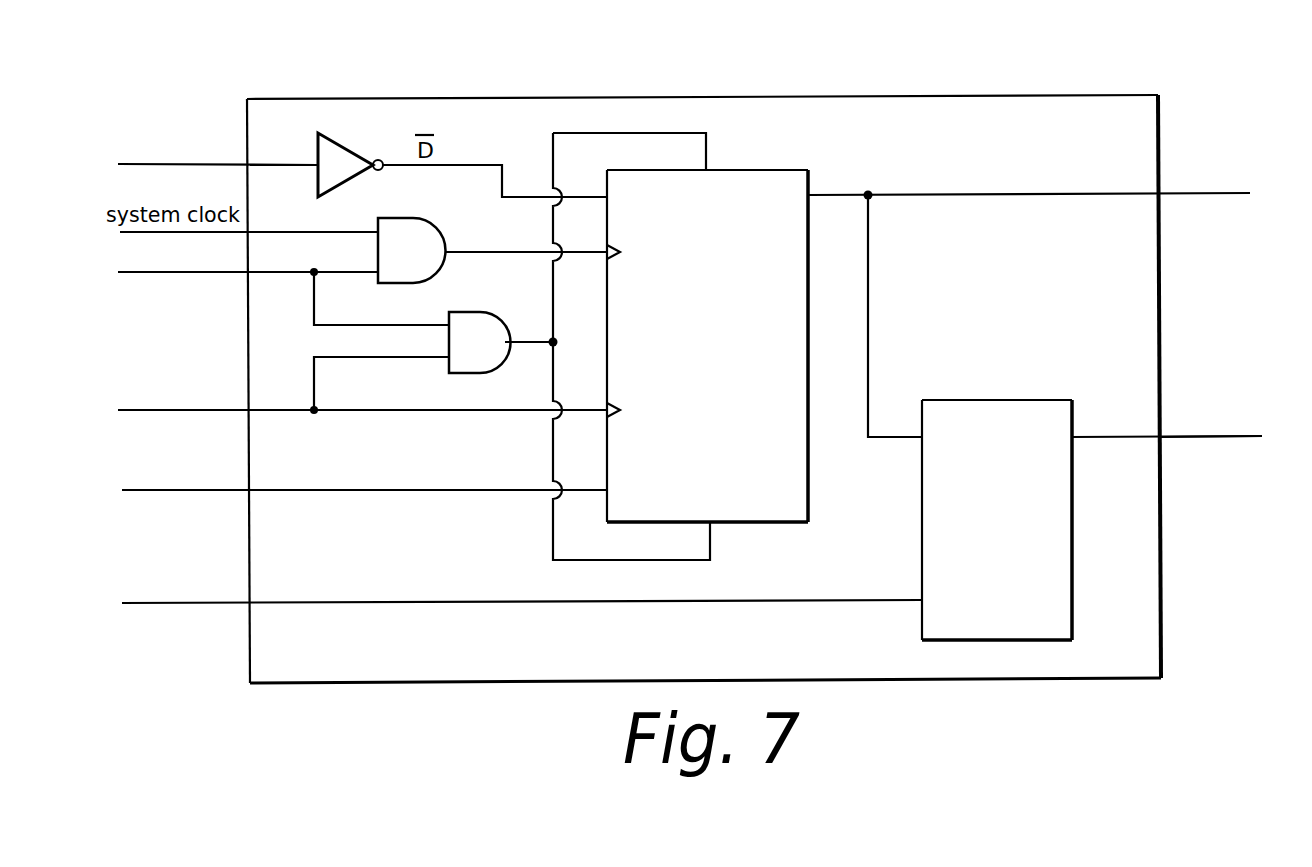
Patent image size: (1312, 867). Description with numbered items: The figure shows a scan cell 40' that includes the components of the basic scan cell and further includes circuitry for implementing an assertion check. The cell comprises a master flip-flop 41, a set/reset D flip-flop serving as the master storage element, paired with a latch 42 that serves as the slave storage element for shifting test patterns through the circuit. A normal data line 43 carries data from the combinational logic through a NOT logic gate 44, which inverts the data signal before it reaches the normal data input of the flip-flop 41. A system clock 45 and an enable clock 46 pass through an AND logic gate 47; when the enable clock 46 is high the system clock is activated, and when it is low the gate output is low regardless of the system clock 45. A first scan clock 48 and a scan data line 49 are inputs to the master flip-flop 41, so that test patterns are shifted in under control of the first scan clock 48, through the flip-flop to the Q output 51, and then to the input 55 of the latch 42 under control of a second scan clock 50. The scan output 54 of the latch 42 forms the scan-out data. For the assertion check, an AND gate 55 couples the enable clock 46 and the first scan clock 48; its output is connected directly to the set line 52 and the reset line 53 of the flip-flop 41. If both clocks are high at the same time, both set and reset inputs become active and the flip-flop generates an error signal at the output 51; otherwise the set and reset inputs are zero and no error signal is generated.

The scan cell 40' is at (777, 383).
The master flip-flop 41 is at (772, 449).
The latch 42 is at (1013, 602).
The normal data line 43 is at (234, 163).
The NOT logic gate 44 is at (338, 143).
The system clock 45 is at (257, 166).
The enable clock 46 is at (268, 274).
The AND logic gate 47 is at (414, 266).
The first scan clock 48 is at (272, 412).
The scan data line 49 is at (280, 492).
The second scan clock 50 is at (273, 605).
The Q output 51 is at (830, 195).
The set line 52 is at (707, 145).
The reset line 53 is at (710, 537).
The scan output 54 is at (1170, 440).
The AND gate 55 is at (486, 355).